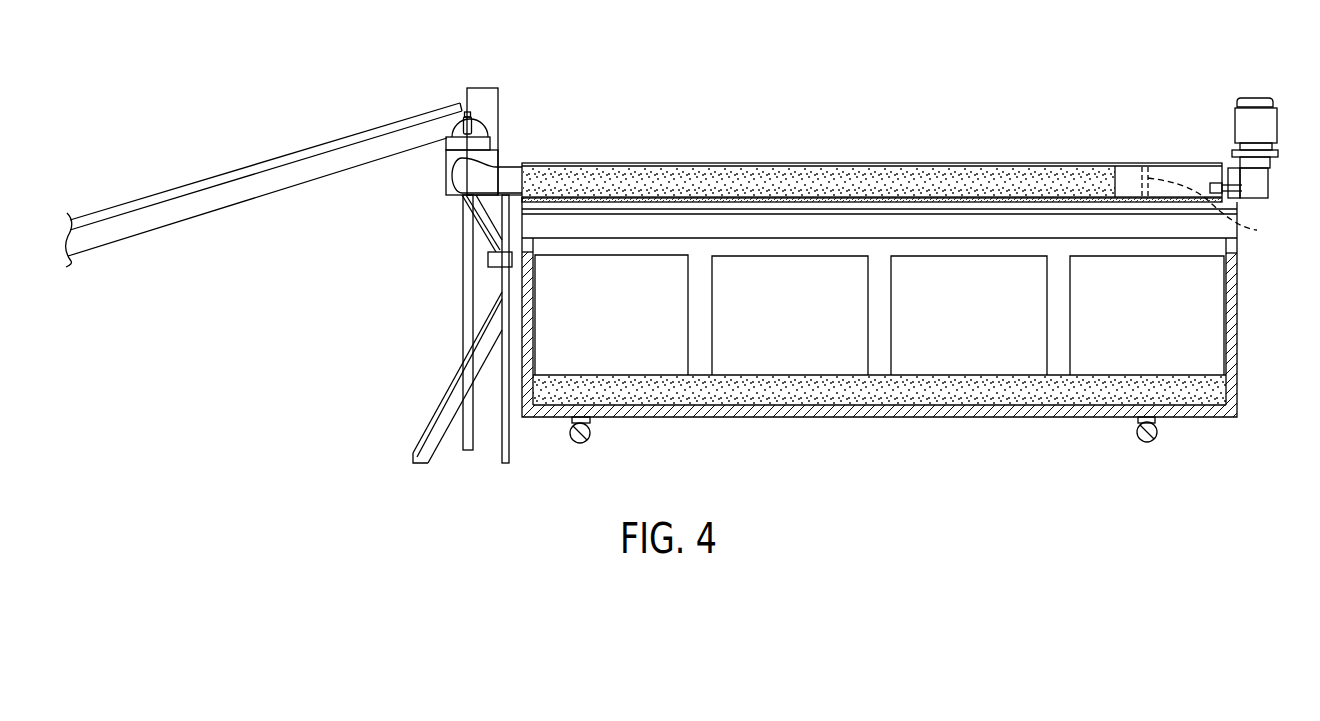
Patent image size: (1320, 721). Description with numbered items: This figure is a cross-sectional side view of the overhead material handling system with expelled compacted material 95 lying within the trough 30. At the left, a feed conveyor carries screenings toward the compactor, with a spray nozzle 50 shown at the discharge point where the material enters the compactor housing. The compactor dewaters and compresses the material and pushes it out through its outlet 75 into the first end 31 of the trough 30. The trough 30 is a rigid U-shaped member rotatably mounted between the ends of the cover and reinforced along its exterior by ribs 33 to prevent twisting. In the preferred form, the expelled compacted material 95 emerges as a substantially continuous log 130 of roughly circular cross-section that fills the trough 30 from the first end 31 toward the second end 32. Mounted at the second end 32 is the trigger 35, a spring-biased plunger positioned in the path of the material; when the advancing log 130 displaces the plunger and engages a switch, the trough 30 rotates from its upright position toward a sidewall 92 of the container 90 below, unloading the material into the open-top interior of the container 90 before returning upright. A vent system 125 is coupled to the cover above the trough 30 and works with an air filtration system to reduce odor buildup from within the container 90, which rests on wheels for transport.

The spray nozzle 50 is at (482, 88).
The outlet 75 is at (512, 180).
The first end 31 is at (524, 188).
The substantially continuous log 130 is at (783, 178).
The expelled compacted material 95 is at (1077, 180).
The trough 30 is at (1130, 180).
The ribs 33 is at (1212, 209).
The trigger 35 is at (1217, 180).
The vent system 125 is at (1260, 97).
The second end 32 is at (1222, 180).
The container 90 is at (1087, 418).
The sidewall 92 is at (1193, 320).